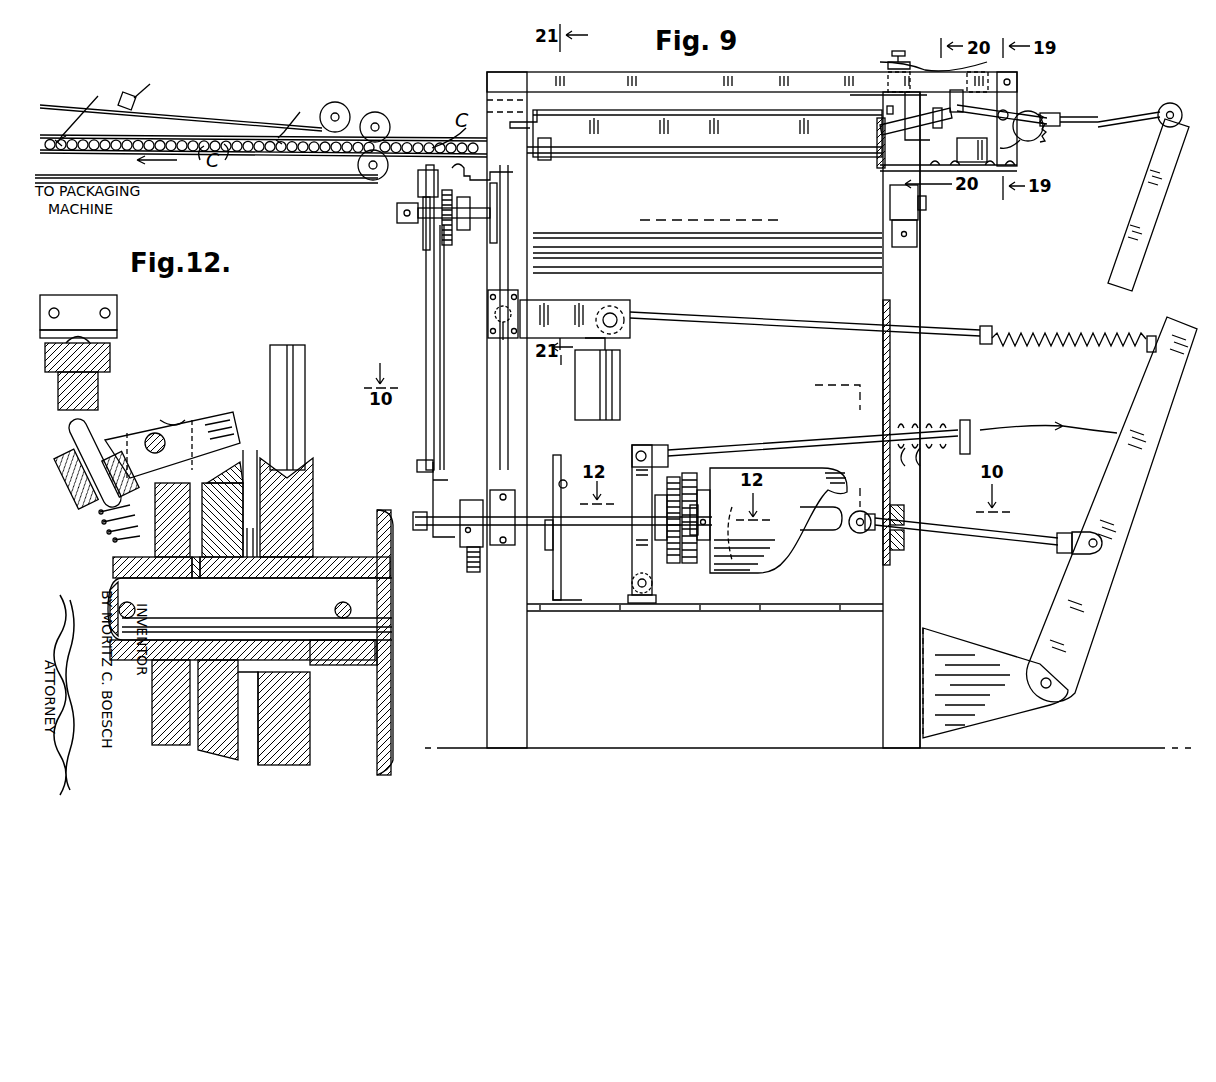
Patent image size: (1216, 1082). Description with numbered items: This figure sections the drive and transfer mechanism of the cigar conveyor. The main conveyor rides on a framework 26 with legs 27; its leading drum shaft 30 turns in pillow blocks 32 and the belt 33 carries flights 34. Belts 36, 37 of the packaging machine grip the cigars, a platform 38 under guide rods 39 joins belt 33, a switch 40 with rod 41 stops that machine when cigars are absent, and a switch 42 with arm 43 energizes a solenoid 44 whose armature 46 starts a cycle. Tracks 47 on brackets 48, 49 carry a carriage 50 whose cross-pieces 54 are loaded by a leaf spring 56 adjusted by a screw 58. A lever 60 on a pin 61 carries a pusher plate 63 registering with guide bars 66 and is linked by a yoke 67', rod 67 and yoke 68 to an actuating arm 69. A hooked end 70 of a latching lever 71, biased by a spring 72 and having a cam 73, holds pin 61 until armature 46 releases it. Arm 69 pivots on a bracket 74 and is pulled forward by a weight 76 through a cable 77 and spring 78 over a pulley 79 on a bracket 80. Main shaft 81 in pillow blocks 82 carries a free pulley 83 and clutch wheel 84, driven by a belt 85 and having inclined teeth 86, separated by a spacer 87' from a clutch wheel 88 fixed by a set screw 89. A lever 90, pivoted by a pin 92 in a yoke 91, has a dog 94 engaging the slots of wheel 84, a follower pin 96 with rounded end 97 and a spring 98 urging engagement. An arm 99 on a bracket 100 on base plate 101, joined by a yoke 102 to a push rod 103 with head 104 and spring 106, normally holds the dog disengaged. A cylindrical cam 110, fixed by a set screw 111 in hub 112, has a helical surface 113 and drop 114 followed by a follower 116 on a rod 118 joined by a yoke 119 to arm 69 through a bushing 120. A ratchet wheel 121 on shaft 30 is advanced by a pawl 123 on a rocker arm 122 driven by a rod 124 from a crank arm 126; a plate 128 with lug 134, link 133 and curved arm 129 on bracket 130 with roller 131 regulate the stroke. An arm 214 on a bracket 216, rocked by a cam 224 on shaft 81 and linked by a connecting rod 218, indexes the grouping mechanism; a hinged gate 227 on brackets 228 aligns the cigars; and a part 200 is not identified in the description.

In FIG. 9, the frame side member 26 is at (957, 299).
In FIG. 9, the frame upright 27 is at (925, 382).
In FIG. 9, the motor 30 is at (396, 210).
In FIG. 9, the mounting bracket 32 is at (540, 226).
In FIG. 9, the lower roller 33 is at (778, 270).
In FIG. 9, the roller 34 is at (722, 230).
In FIG. 9, the delivery conveyor 36 is at (305, 188).
In FIG. 9, the belt 37 is at (182, 124).
In FIG. 9, the pulley 38 is at (386, 118).
In FIG. 9, the roller conveyor 39 is at (446, 129).
In FIG. 9, the sensing element 40 is at (138, 94).
In FIG. 9, the finger 41 is at (72, 134).
In FIG. 9, the pulley 42 is at (336, 100).
In FIG. 9, the finger 43 is at (288, 128).
In FIG. 9, the plate 44 is at (990, 171).
In FIG. 9, the ratchet wheel 46 is at (1050, 140).
In FIG. 9, the top frame member 47 is at (760, 86).
In FIG. 9, the frame post 48 is at (500, 92).
In FIG. 9, the bracket 49 is at (1017, 88).
In FIG. 9, the arm 50 is at (876, 102).
In FIG. 9, the guide block 54 is at (892, 72).
In FIG. 9, the spring wire 56 is at (930, 66).
In FIG. 9, the adjusting screw 58 is at (898, 50).
In FIG. 9, the lever 60 is at (882, 130).
In FIG. 9, the link 61 is at (937, 108).
In FIG. 9, the post 63 is at (878, 152).
In FIG. 9, the chain rollers 66 is at (406, 134).
In FIG. 9, the connecting rod 67 is at (1127, 105).
In FIG. 9, the rod coupling 67' is at (1069, 100).
In FIG. 9, the crank arm 68 is at (1170, 115).
In FIG. 9, the lever arm 69 is at (1180, 312).
In FIG. 9, the housing 70 is at (958, 148).
In FIG. 9, the pivot 71 is at (1009, 114).
In FIG. 9, the pawl 72 is at (1030, 142).
In FIG. 9, the pin 73 is at (886, 112).
In FIG. 9, the bracket 74 is at (1005, 708).
In FIG. 9, the motor 76 is at (622, 400).
In FIG. 9, the rod 77 is at (718, 320).
In FIG. 9, the spring 78 is at (1045, 334).
In FIG. 9, the mounting plate 79 is at (618, 320).
In FIG. 9, the bracket 80 is at (546, 340).
In FIG. 9, the shaft 81 is at (588, 515).
In FIG. 12, the shaft 81 is at (114, 596).
In FIG. 9, the bearing 82 is at (512, 500).
In FIG. 9, the clutch member 83 is at (692, 570).
In FIG. 12, the clutch member 83 is at (292, 766).
In FIG. 9, the gear 84 is at (676, 566).
In FIG. 12, the gear 84 is at (215, 760).
In FIG. 12, the bar 85 is at (305, 376).
In FIG. 12, the slot 86 is at (245, 766).
In FIG. 12, the plate 87' is at (242, 623).
In FIG. 9, the gear 88 is at (654, 580).
In FIG. 12, the gear 88 is at (170, 746).
In FIG. 12, the pin 89 is at (136, 607).
In FIG. 12, the arm 90 is at (212, 404).
In FIG. 12, the pivot 91 is at (178, 420).
In FIG. 12, the pin 92 is at (155, 433).
In FIG. 12, the block 94 is at (226, 438).
In FIG. 12, the bushing 96 is at (78, 486).
In FIG. 12, the pin 97 is at (76, 428).
In FIG. 12, the screws 98 is at (100, 530).
In FIG. 9, the arm 99 is at (632, 545).
In FIG. 12, the arm 99 is at (110, 356).
In FIG. 9, the pivot block 100 is at (640, 604).
In FIG. 12, the pivot block 100 is at (84, 296).
In FIG. 9, the cross member 101 is at (845, 612).
In FIG. 9, the pivot 102 is at (658, 442).
In FIG. 9, the rod 103 is at (758, 444).
In FIG. 9, the collar 104 is at (972, 424).
In FIG. 9, the springs 106 is at (935, 450).
In FIG. 9, the flange 110 is at (745, 585).
In FIG. 12, the flange 110 is at (392, 730).
In FIG. 12, the flange 111 is at (352, 560).
In FIG. 12, the plate 112 is at (346, 666).
In FIG. 9, the cam 113 is at (802, 574).
In FIG. 9, the cam shaft 114 is at (836, 532).
In FIG. 9, the knuckle 116 is at (858, 534).
In FIG. 9, the rod 118 is at (1002, 546).
In FIG. 9, the clevis 119 is at (1078, 534).
In FIG. 9, the bearing block 120 is at (920, 568).
In FIG. 9, the rod 121 is at (428, 262).
In FIG. 9, the rod 122 is at (422, 242).
In FIG. 9, the gear 123 is at (430, 170).
In FIG. 9, the post 124 is at (426, 345).
In FIG. 9, the bracket 126 is at (446, 470).
In FIG. 9, the shaft 128 is at (500, 265).
In FIG. 9, the bearing plate 129 is at (488, 298).
In FIG. 9, the bearing 130 is at (495, 338).
In FIG. 9, the block 131 is at (554, 160).
In FIG. 9, the rod 133 is at (515, 176).
In FIG. 9, the slot 134 is at (492, 172).
In FIG. 9, the collar 200 is at (465, 575).
In FIG. 9, the post 214 is at (562, 460).
In FIG. 9, the foot 216 is at (560, 602).
In FIG. 9, the pin 218 is at (568, 480).
In FIG. 9, the bar 224 is at (550, 560).
In FIG. 9, the shaft 227 is at (710, 152).
In FIG. 9, the rod 228 is at (540, 108).